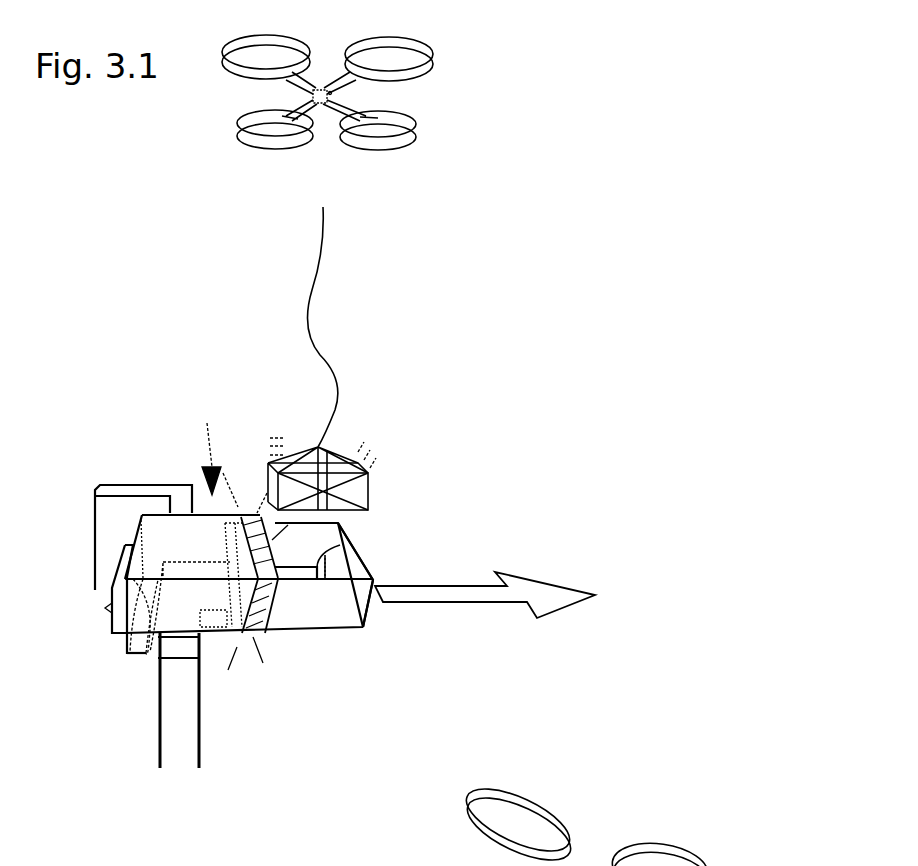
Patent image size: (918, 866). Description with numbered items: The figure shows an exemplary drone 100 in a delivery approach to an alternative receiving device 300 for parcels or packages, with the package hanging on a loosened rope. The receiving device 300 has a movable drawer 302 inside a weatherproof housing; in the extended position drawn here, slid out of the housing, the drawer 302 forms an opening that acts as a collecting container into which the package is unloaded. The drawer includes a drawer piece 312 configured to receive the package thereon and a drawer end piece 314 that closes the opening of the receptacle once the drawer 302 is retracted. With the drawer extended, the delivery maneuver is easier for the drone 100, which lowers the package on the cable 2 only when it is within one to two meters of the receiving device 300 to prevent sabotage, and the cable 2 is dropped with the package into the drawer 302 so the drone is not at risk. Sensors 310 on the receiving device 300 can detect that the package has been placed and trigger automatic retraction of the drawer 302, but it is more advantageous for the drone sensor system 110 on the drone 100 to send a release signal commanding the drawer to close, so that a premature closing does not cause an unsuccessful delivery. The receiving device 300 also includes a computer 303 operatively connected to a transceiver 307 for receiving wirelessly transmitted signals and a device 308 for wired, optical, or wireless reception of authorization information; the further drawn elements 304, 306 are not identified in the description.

The drone 100 is at (418, 45).
The drone sensor system 110 is at (307, 97).
The cable 2 is at (313, 283).
The alternative receiving device 300 is at (226, 413).
The movable drawer 302 is at (331, 618).
The computer 303 is at (118, 640).
The transceiver 307 is at (114, 711).
The closure element 304 is at (148, 648).
The conveyor belt 306 is at (254, 636).
The device for reception of authorization information 308 is at (106, 608).
The sensors 310 is at (212, 627).
The drawer piece 312 is at (340, 545).
The drawer end piece 314 is at (357, 557).